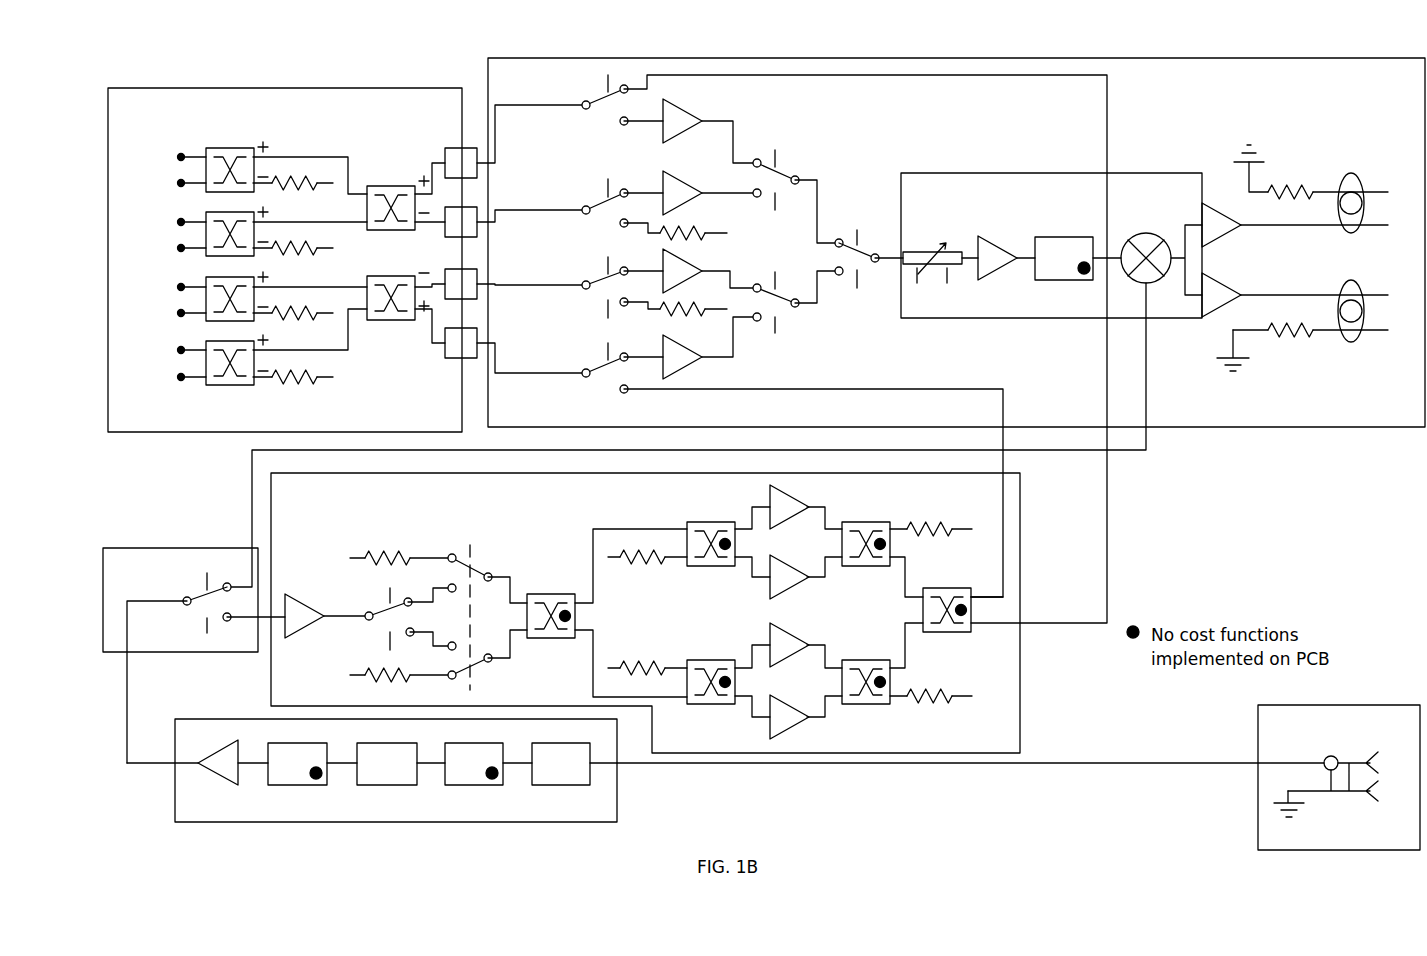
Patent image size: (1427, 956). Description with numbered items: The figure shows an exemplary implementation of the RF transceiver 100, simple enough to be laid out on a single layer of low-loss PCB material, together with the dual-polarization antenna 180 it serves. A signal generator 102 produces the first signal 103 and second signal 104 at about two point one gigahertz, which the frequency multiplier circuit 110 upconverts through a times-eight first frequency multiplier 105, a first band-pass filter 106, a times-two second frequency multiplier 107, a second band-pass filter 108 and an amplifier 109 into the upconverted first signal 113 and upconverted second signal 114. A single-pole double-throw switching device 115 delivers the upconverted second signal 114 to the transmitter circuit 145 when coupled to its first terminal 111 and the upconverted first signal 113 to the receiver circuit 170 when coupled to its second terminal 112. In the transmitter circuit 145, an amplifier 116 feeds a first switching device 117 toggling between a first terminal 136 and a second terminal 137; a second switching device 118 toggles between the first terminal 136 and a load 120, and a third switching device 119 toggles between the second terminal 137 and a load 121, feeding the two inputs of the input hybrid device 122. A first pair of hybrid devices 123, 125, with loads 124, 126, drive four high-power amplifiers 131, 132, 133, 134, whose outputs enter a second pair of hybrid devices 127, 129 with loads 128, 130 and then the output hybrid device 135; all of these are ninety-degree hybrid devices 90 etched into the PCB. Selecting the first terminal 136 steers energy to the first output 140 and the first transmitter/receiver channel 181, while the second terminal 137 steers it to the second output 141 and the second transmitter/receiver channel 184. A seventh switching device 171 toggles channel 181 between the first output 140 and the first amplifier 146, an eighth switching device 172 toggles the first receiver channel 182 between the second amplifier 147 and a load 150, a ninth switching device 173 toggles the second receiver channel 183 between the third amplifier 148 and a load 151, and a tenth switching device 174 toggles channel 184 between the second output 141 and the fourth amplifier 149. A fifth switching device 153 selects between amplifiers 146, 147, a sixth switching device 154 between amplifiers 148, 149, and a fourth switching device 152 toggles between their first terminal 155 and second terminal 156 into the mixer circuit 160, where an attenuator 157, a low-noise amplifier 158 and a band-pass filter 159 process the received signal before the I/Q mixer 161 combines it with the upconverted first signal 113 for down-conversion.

The RF transceiver 100 is at (160, 53).
The antenna 180 is at (276, 88).
The receiver circuit 170 is at (1260, 427).
The first transmitter/receiver channel 181 is at (531, 123).
The first receiver channel 182 is at (531, 212).
The second receiver channel 183 is at (531, 291).
The second transmitter/receiver channel 184 is at (531, 371).
The seventh switching device 171 is at (837, 349).
The eighth switching device 172 is at (615, 219).
The ninth switching device 173 is at (615, 295).
The tenth switching device 174 is at (782, 466).
The first amplifier 146 is at (710, 129).
The second amplifier 147 is at (710, 195).
The third amplifier 148 is at (710, 273).
The fourth amplifier 149 is at (710, 351).
The load 150 is at (675, 240).
The load 151 is at (675, 317).
The fifth switching device 153 is at (789, 190).
The sixth switching device 154 is at (789, 310).
The fourth switching device 152 is at (863, 260).
The first terminal 155 is at (840, 225).
The second terminal 156 is at (840, 278).
The mixer circuit 160 is at (1145, 172).
The attenuator 157 is at (940, 240).
The low-noise amplifier 158 is at (1005, 235).
The band-pass filter 159 is at (1078, 247).
The I/Q mixer 161 is at (1161, 254).
The upconverted first signal 113 is at (252, 500).
The switching device 115 is at (167, 547).
The second terminal 112 is at (229, 572).
The first terminal 111 is at (231, 621).
The upconverted second signal 114 is at (283, 620).
The first signal 103 is at (164, 723).
The second signal 104 is at (970, 751).
The first output 140 is at (1005, 627).
The transmitter circuit 145 is at (988, 752).
The amplifier 116 is at (323, 615).
The first switching device 117 is at (389, 617).
The first terminal 136 is at (409, 591).
The second terminal 137 is at (411, 640).
The load 120 is at (401, 548).
The load 121 is at (401, 688).
The second switching device 118 is at (481, 567).
The third switching device 119 is at (481, 669).
The ninety-degree hybrid device 90 is at (765, 612).
The input hybrid device 122 is at (607, 613).
The hybrid device 123 is at (728, 545).
The load 124 is at (647, 571).
The hybrid device 125 is at (728, 681).
The load 126 is at (647, 653).
The hybrid device 127 is at (882, 548).
The load 128 is at (931, 517).
The hybrid device 129 is at (882, 674).
The load 130 is at (931, 711).
The high-power amplifier 131 is at (806, 509).
The high-power amplifier 132 is at (806, 577).
The high-power amplifier 133 is at (806, 643).
The high-power amplifier 134 is at (806, 713).
The output hybrid device 135 is at (963, 600).
The second output 141 is at (987, 593).
The frequency multiplier circuit 110 is at (620, 787).
The amplifier 109 is at (225, 770).
The second band-pass filter 108 is at (312, 778).
The second frequency multiplier 107 is at (401, 768).
The first band-pass filter 106 is at (488, 778).
The first frequency multiplier 105 is at (574, 768).
The signal generator 102 is at (1258, 789).